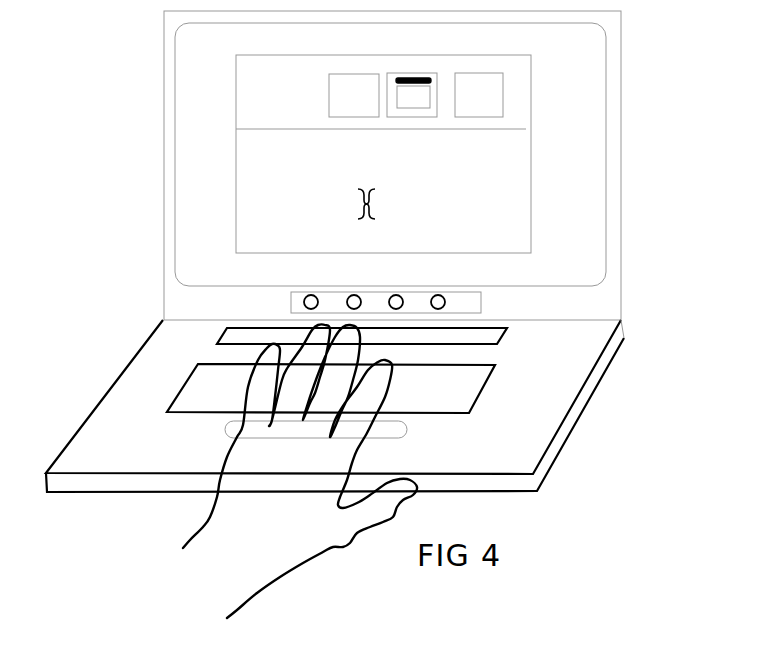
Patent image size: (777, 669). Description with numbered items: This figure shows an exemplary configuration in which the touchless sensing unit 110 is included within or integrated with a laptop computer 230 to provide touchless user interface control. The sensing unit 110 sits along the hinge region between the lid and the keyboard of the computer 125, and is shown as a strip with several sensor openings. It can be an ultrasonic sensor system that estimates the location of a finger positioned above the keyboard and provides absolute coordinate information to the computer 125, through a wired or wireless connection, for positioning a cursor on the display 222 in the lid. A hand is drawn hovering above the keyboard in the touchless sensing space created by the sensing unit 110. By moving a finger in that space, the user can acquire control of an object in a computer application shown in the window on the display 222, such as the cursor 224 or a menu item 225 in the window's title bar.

The display lid 222 is at (192, 127).
The laptop computer 230 is at (708, 48).
The menu item 225 is at (329, 98).
The cursor 224 is at (357, 200).
The sensing unit 110 is at (481, 305).
The computer 125 is at (603, 377).